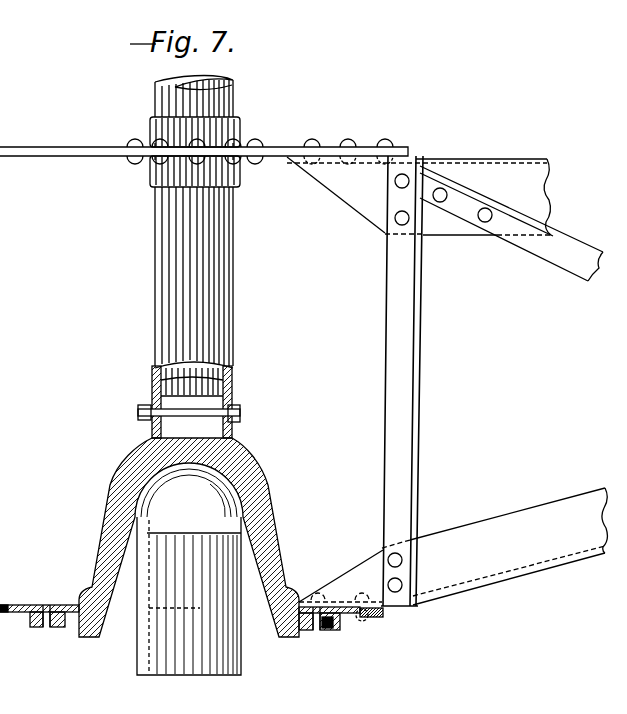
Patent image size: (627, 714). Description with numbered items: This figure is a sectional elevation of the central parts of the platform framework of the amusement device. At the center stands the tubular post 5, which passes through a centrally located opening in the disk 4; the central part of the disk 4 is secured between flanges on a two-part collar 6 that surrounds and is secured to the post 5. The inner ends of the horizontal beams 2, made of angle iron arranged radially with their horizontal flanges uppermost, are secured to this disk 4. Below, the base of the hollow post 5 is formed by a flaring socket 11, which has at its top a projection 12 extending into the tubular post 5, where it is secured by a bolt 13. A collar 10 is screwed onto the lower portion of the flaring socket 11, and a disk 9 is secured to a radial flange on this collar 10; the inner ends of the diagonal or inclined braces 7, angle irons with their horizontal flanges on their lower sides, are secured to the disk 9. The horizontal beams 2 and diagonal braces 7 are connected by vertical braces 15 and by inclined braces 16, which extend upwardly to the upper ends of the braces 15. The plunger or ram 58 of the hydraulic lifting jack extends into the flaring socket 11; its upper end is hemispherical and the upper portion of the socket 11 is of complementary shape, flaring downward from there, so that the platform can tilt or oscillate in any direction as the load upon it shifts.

The horizontal beams 2 is at (487, 178).
The disk 4 is at (287, 153).
The tubular post 5 is at (222, 313).
The two-part collar 6 is at (240, 133).
The diagonal braces 7 is at (528, 522).
The disk 9 is at (30, 603).
The collar 10 is at (299, 633).
The flaring socket 11 is at (279, 550).
The projection 12 is at (235, 431).
The bolt 13 is at (231, 410).
The vertical braces 15 is at (398, 422).
The inclined braces 16 is at (542, 243).
The plunger or ram 58 is at (239, 671).